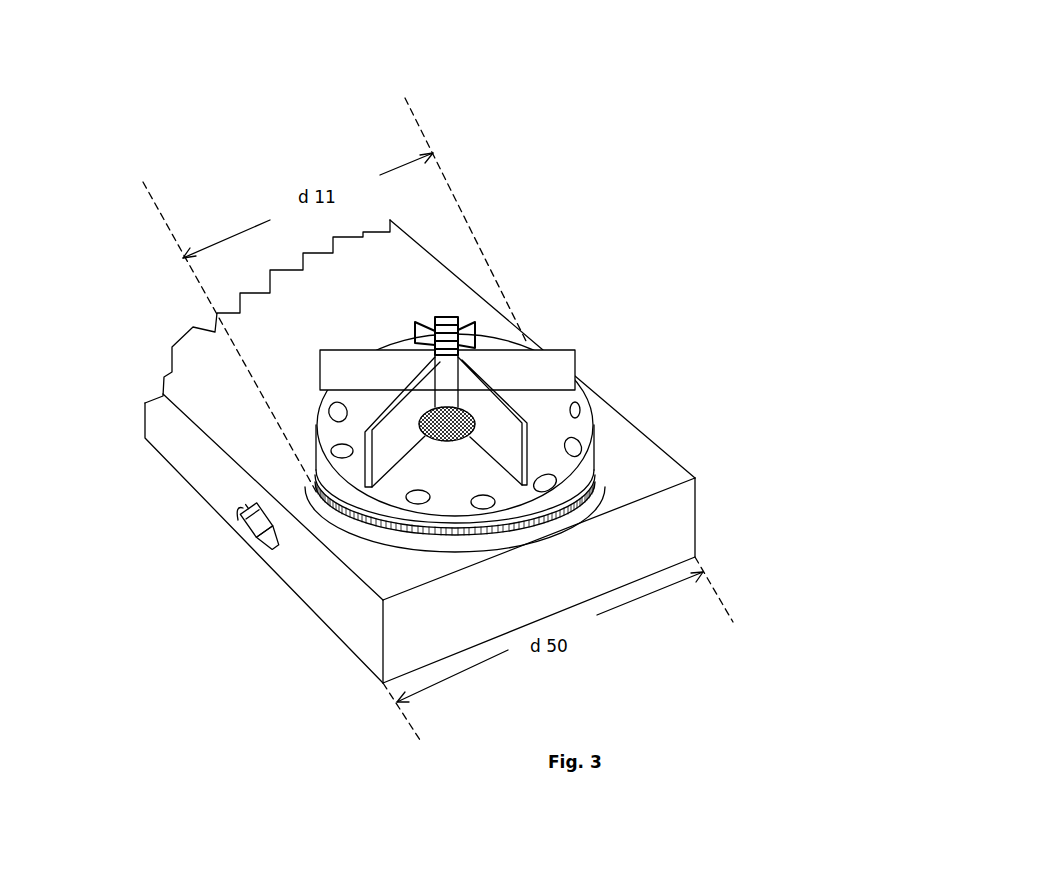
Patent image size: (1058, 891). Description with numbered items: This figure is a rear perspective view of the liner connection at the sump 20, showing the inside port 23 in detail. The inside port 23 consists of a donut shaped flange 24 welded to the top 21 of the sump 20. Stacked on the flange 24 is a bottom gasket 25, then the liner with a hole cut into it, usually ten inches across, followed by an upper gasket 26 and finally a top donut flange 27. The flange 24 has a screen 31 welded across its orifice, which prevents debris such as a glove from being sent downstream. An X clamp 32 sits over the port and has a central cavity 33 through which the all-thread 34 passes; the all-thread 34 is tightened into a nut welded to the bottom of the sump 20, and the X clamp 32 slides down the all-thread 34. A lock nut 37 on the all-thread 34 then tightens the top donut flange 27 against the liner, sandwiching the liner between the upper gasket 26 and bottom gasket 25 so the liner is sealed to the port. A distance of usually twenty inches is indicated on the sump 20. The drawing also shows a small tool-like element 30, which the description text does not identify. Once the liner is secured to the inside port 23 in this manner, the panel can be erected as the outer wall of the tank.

The sump 20 is at (205, 458).
The top of the sump 21 is at (202, 380).
The inside port 23 is at (723, 153).
The donut shaped flange 24 is at (586, 485).
The bottom gasket 25 is at (470, 537).
The upper gasket 26 is at (583, 498).
The top donut flange 27 is at (580, 427).
The cutting tool 30 is at (253, 535).
The screen 31 is at (450, 417).
The X clamp 32 is at (580, 378).
The central cavity 33 is at (478, 346).
The all-thread 34 is at (447, 318).
The lock nut 37 is at (521, 329).